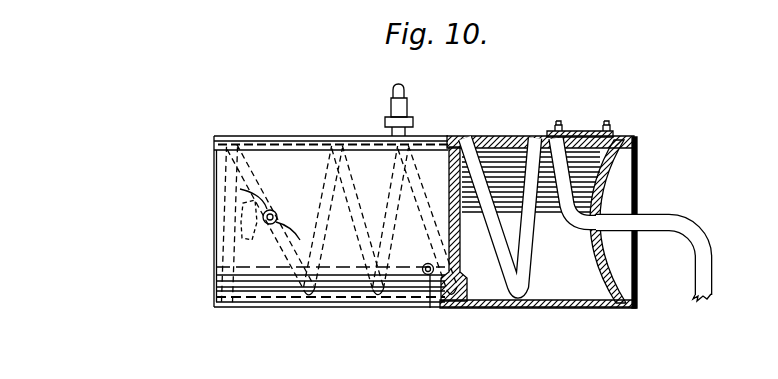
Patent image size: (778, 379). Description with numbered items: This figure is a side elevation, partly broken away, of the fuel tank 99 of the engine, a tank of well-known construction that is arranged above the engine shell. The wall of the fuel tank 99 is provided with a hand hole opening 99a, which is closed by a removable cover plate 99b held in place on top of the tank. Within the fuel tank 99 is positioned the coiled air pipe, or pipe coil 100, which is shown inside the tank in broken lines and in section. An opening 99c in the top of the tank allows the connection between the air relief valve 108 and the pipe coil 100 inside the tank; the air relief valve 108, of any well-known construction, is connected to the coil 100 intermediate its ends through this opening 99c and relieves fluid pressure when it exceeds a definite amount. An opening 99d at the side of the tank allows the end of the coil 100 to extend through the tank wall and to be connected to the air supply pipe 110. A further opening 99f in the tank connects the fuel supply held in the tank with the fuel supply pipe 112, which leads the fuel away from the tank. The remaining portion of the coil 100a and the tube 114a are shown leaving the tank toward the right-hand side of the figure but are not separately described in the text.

The fuel tank 99 is at (533, 309).
The hand hole opening 99a is at (608, 108).
The removable cover plate 99b is at (594, 131).
The opening in the top of the tank 99c is at (413, 147).
The opening at the side of the tank 99d is at (250, 234).
The opening in the tank 99f is at (421, 277).
The pipe coil 100 is at (523, 250).
The coil outlet elbow 100a is at (603, 184).
The air relief valve 108 is at (393, 110).
The air supply pipe 110 is at (240, 189).
The fuel supply pipe 112 is at (430, 308).
The outlet tube 114a is at (703, 274).